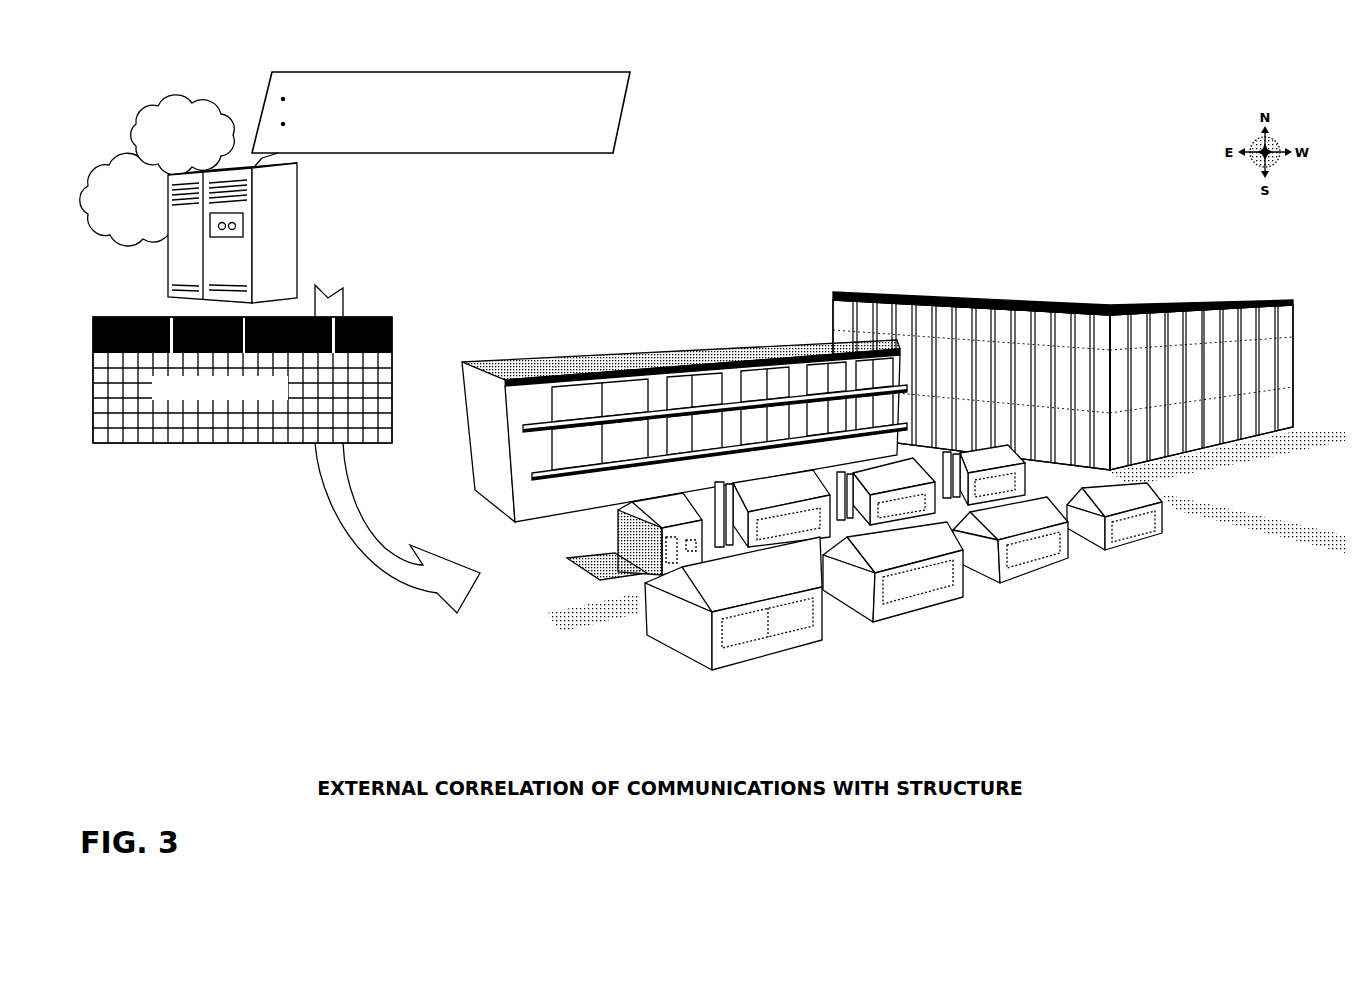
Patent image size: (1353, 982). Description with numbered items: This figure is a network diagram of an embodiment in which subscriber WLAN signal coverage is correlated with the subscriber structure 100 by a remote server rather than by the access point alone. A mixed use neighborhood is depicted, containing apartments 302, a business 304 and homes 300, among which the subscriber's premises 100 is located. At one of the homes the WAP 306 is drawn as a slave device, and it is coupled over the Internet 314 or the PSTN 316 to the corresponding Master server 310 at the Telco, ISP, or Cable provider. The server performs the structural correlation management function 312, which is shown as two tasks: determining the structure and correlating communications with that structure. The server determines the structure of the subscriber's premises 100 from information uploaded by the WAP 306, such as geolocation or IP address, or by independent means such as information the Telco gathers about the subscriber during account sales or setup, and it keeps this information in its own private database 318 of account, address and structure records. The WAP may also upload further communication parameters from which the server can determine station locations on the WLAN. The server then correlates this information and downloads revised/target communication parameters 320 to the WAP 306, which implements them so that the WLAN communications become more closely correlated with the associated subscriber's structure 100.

The subscriber structure 100 is at (612, 531).
The homes 300 is at (995, 610).
The apartments 302 is at (713, 336).
The business 304 is at (1150, 288).
The WAP 306 is at (598, 568).
The Master server 310 is at (298, 218).
The structural correlation management function 312 is at (580, 74).
The Internet 314 is at (120, 158).
The PSTN 316 is at (202, 108).
The private database 318 is at (192, 444).
The revised/target communication parameters 320 is at (311, 468).